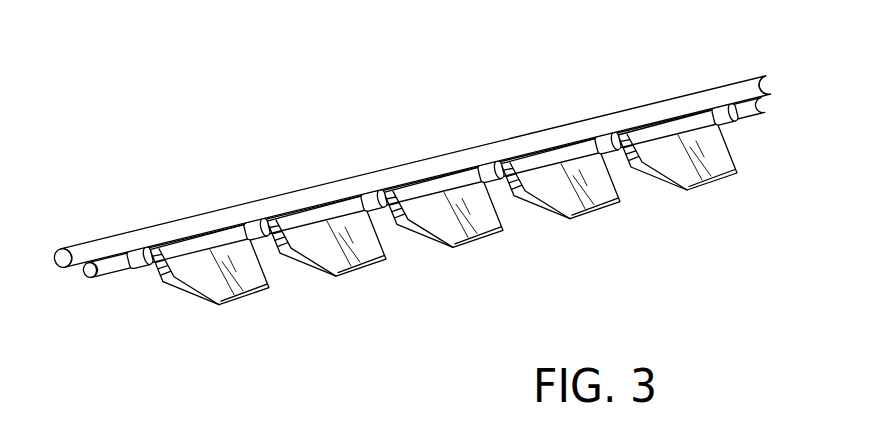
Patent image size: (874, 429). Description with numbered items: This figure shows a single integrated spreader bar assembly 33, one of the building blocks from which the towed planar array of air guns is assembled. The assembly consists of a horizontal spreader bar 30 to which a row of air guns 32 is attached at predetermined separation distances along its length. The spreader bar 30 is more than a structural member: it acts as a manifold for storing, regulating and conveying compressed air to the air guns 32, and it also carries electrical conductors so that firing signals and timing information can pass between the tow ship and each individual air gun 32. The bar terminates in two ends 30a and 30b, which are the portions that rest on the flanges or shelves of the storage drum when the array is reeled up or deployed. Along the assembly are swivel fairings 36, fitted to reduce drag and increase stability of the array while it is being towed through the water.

The spreader bar 30 is at (312, 187).
The end of spreader bar 30a is at (58, 248).
The end of spreader bar 30b is at (767, 75).
The air gun 32 is at (142, 264).
The spreader bar assembly 33 is at (429, 77).
The swivel fairing 36 is at (216, 313).